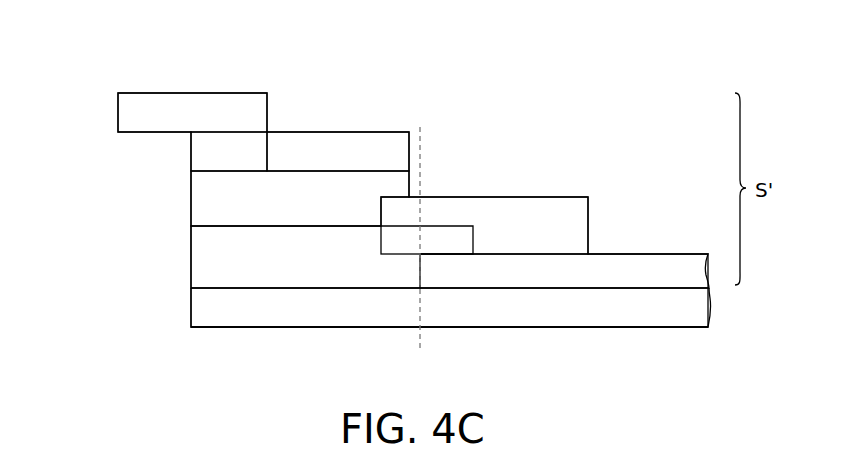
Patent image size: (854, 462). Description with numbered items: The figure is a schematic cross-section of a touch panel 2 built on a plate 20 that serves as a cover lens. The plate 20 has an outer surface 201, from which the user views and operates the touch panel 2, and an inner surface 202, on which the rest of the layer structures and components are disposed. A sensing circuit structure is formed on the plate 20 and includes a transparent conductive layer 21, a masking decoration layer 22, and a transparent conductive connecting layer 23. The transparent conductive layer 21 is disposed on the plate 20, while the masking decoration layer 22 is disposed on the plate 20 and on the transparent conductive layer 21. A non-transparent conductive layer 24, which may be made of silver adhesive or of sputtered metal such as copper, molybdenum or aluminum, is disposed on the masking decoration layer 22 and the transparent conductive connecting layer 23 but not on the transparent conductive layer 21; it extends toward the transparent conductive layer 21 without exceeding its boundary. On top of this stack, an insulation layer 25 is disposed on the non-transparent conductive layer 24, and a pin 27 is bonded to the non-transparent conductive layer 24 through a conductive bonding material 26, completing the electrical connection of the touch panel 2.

The touch panel 2 is at (135, 65).
The plate 20 is at (642, 318).
The outer surface 201 is at (205, 326).
The inner surface 202 is at (205, 287).
The transparent conductive layer 21 is at (640, 258).
The masking decoration layer 22 is at (205, 249).
The transparent conductive connecting layer 23 is at (563, 200).
The non-transparent conductive layer 24 is at (205, 205).
The insulation layer 25 is at (395, 156).
The conductive bonding material 26 is at (205, 157).
The pin 27 is at (135, 116).